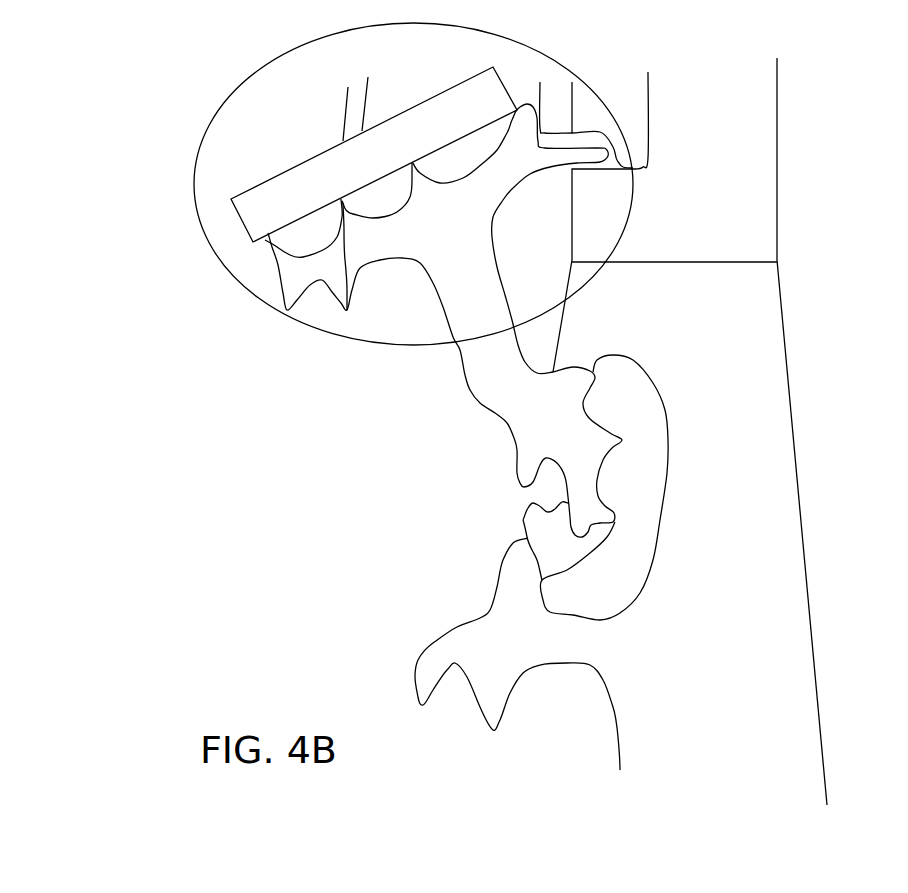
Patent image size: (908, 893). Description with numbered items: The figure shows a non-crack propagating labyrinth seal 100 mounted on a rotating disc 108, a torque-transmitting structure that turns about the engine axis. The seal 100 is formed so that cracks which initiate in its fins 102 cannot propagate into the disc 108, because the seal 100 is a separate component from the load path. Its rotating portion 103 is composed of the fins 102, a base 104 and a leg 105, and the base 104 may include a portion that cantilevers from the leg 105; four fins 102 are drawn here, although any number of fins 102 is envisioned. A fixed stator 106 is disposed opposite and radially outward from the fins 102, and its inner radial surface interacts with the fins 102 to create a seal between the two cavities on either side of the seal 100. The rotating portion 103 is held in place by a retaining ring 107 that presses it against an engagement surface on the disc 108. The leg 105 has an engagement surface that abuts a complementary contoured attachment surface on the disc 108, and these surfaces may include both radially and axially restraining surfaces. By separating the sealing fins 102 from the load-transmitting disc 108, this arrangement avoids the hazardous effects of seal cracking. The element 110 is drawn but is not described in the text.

The labyrinth seal 100 is at (197, 203).
The fins 102 is at (277, 263).
The rotating portion 103 is at (428, 395).
The base 104 is at (483, 197).
The leg 105 is at (473, 307).
The stator 106 is at (442, 118).
The retaining ring 107 is at (550, 527).
The disc 108 is at (768, 600).
The device housing 110 is at (750, 112).